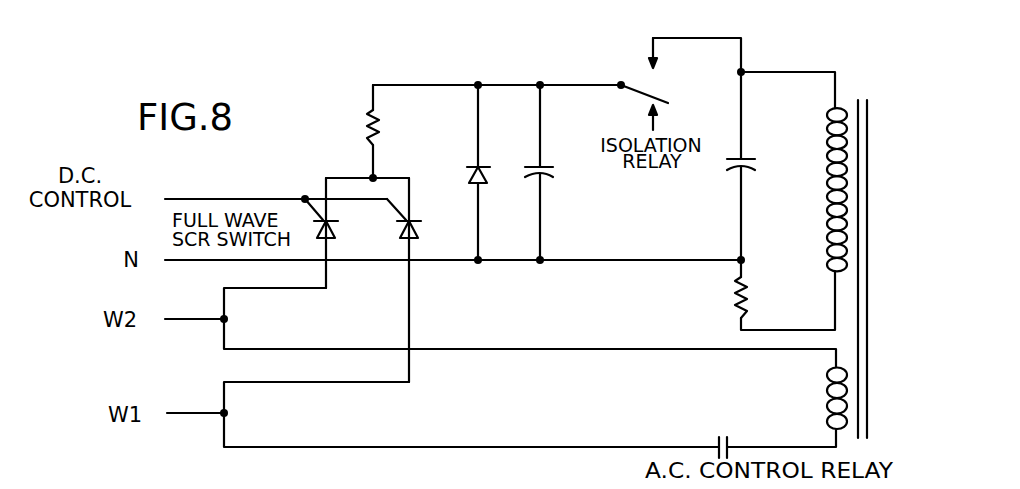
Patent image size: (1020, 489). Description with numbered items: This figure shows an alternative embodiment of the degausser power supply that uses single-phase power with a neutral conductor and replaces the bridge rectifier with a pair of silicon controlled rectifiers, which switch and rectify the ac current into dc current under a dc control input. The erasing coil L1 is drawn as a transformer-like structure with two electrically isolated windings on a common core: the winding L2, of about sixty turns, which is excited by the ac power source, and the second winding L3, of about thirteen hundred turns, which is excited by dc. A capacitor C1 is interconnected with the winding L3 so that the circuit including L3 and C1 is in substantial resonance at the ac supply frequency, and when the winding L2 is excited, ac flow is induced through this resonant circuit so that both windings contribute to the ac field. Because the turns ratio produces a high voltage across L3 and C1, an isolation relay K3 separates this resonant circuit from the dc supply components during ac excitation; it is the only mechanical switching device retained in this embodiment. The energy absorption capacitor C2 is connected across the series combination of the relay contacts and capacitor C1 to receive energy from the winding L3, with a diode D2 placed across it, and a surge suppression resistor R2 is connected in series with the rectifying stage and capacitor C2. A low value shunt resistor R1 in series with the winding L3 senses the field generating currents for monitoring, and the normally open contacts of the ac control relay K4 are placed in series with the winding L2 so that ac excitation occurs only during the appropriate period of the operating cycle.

The surge suppression resistor R2 is at (378, 130).
The diode D2 is at (480, 181).
The energy absorption capacitor C2 is at (545, 178).
The isolation relay K3 is at (643, 73).
The capacitor C1 is at (748, 171).
The second winding L3 is at (826, 231).
The shunt resistor R1 is at (748, 298).
The coil L1 is at (868, 339).
The winding L2 is at (828, 408).
The ac control relay K4 is at (718, 438).